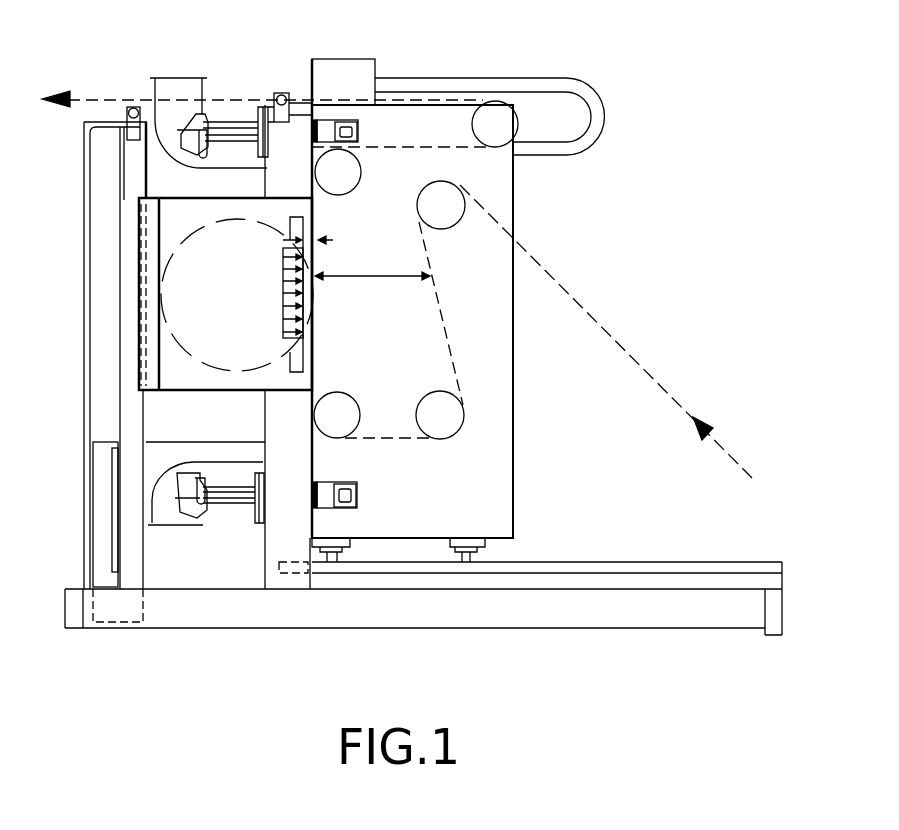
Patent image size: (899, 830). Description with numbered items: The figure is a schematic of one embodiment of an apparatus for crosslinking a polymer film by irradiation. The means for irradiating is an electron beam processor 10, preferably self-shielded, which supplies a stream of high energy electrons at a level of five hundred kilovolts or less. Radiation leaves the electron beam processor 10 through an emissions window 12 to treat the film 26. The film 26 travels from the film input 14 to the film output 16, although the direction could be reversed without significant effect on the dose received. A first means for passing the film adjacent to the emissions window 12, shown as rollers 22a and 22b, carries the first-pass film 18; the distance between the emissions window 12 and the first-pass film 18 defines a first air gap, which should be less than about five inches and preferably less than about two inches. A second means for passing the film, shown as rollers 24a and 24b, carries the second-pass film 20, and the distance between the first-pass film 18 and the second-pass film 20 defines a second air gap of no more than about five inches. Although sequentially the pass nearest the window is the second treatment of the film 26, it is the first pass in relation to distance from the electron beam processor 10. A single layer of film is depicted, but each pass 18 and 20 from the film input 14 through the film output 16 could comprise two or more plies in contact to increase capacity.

The electron beam processor 10 is at (180, 351).
The emissions window 12 is at (283, 268).
The film input 14 is at (733, 458).
The film output 16 is at (88, 96).
The first-pass film 18 is at (312, 336).
The second-pass film 20 is at (440, 303).
The roller 22a is at (335, 402).
The roller 22b is at (335, 185).
The roller 24a is at (442, 428).
The roller 24b is at (452, 172).
The film 26 is at (578, 307).